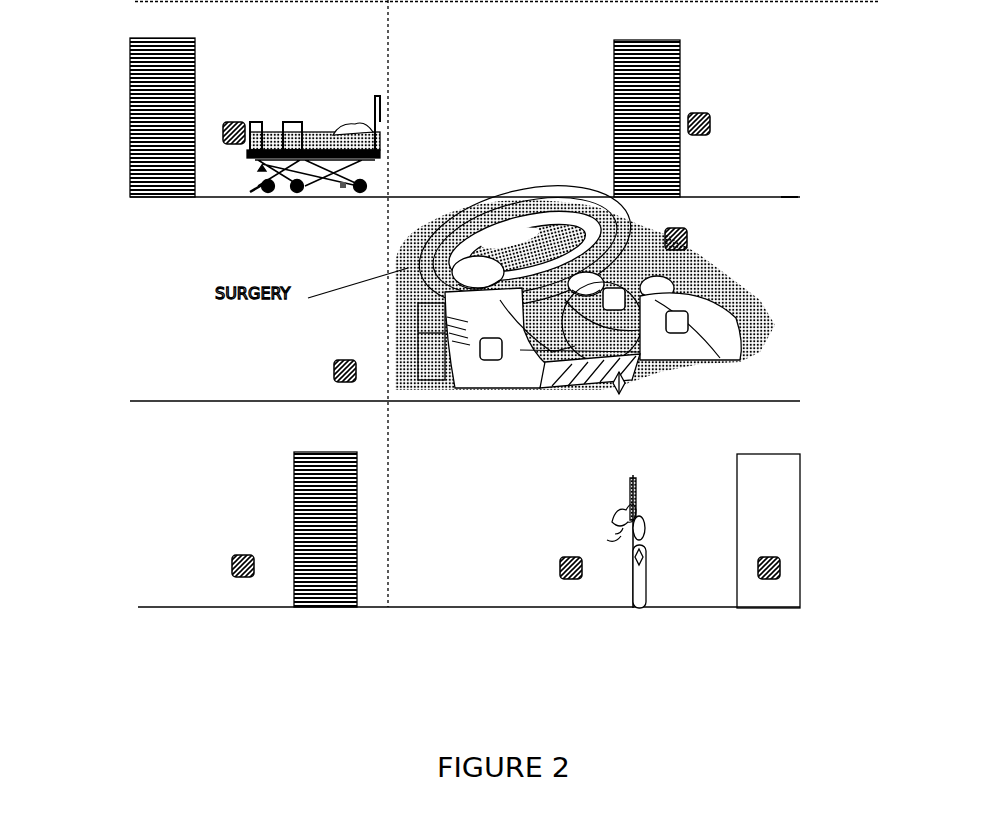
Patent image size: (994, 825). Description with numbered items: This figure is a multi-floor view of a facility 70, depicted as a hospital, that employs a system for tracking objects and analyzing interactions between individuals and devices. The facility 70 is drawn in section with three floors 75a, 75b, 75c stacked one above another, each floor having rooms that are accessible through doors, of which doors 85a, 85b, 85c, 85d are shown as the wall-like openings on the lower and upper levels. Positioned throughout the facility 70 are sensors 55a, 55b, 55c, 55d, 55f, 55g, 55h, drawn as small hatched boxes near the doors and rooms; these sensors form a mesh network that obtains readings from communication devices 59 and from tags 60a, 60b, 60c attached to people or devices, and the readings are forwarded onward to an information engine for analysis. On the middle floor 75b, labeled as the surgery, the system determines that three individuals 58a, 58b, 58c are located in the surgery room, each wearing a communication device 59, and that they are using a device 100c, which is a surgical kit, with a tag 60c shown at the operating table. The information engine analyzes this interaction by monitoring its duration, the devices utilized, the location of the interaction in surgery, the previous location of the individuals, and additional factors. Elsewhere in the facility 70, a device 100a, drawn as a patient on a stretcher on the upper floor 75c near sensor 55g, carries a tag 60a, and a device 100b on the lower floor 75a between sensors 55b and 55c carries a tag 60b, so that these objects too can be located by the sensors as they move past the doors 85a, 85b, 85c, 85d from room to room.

The facility 70 is at (335, 664).
The floor 75a is at (170, 513).
The floor 75b is at (765, 229).
The floor 75c is at (152, 28).
The door 85a is at (296, 460).
The door 85b is at (800, 494).
The door 85c is at (130, 100).
The door 85d is at (680, 92).
The sensor 55a is at (232, 566).
The sensor 55b is at (571, 580).
The sensor 55c is at (778, 580).
The sensor 55d is at (333, 371).
The sensor 55f is at (667, 236).
The sensor 55g is at (234, 122).
The sensor 55h is at (712, 122).
The communication device 59 is at (584, 324).
The individual 58a is at (602, 317).
The individual 58b is at (690, 318).
The individual 58c is at (496, 322).
The tag 60a is at (262, 168).
The tag 60b is at (645, 556).
The tag 60c is at (626, 380).
The device 100a is at (315, 133).
The device 100b is at (632, 495).
The device 100c is at (627, 360).